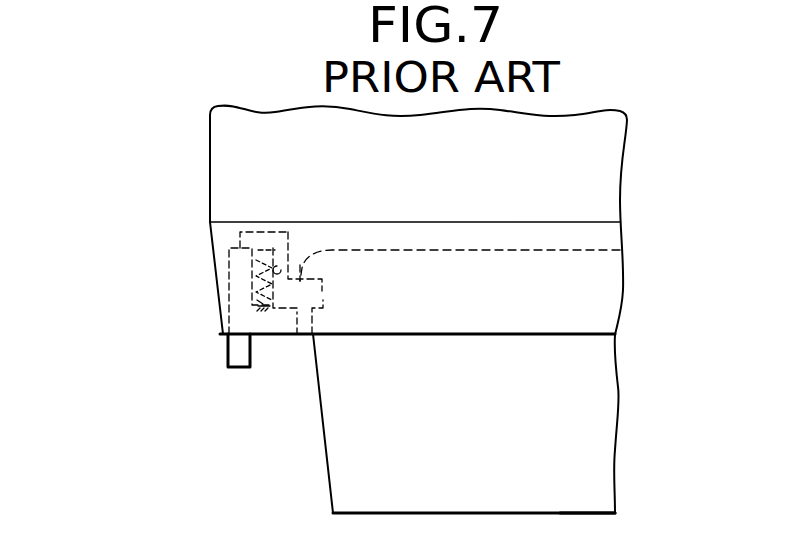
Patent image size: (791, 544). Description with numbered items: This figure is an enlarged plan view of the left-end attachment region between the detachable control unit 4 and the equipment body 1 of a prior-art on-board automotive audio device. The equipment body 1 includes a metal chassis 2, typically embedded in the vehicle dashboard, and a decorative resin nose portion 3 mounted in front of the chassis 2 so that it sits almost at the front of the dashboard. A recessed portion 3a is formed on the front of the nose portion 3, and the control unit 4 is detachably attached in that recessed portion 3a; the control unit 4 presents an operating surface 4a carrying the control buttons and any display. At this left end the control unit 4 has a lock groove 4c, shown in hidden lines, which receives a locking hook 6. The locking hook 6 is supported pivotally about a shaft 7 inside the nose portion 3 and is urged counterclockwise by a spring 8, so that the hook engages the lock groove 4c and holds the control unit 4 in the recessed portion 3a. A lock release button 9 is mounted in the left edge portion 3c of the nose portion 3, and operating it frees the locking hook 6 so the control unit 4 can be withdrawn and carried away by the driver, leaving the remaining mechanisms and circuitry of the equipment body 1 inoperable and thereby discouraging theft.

The equipment body 1 is at (184, 117).
The metal chassis 2 is at (225, 175).
The nose portion 3 is at (550, 233).
The recessed portion 3a is at (460, 250).
The left edge portion 3c is at (273, 334).
The control unit 4 is at (595, 427).
The operating surface 4a is at (588, 516).
The lock groove 4c is at (322, 291).
The locking hook 6 is at (305, 248).
The shaft 7 is at (283, 268).
The spring 8 is at (242, 280).
The lock release button 9 is at (228, 353).